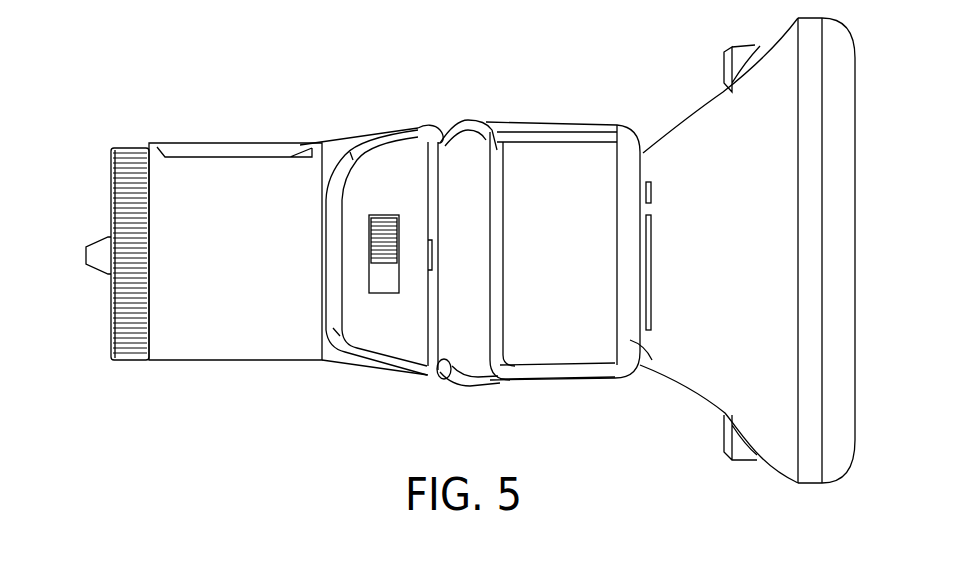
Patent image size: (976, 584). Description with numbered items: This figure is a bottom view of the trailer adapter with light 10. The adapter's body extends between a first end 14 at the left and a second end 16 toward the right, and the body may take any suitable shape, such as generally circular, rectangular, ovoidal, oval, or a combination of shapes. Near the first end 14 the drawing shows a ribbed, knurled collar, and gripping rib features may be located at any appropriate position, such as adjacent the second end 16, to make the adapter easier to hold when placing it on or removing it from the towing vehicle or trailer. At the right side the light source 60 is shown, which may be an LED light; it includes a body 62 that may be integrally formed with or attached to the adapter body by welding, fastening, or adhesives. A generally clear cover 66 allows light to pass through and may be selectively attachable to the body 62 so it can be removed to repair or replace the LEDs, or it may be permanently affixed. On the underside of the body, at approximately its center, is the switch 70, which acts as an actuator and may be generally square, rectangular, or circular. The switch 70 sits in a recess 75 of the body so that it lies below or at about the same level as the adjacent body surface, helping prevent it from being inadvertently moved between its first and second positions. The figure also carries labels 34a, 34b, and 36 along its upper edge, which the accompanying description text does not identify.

The trailer adapter with light 10 is at (279, 100).
The first end 14 is at (90, 150).
The second end 16 is at (622, 105).
The arm 34a is at (465, 10).
The arm 34b is at (375, 4).
The blade 36 is at (520, 4).
The light source 60 is at (727, 126).
The body 62 is at (632, 340).
The clear cover 66 is at (837, 128).
The switch 70 is at (388, 233).
The recess 75 is at (411, 155).